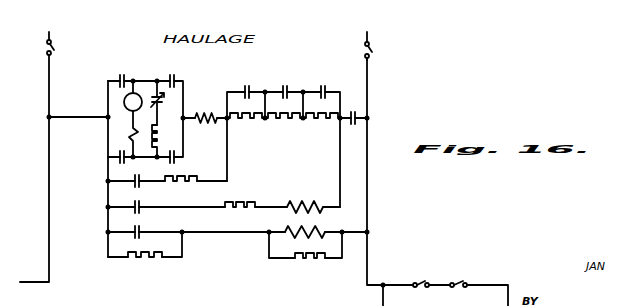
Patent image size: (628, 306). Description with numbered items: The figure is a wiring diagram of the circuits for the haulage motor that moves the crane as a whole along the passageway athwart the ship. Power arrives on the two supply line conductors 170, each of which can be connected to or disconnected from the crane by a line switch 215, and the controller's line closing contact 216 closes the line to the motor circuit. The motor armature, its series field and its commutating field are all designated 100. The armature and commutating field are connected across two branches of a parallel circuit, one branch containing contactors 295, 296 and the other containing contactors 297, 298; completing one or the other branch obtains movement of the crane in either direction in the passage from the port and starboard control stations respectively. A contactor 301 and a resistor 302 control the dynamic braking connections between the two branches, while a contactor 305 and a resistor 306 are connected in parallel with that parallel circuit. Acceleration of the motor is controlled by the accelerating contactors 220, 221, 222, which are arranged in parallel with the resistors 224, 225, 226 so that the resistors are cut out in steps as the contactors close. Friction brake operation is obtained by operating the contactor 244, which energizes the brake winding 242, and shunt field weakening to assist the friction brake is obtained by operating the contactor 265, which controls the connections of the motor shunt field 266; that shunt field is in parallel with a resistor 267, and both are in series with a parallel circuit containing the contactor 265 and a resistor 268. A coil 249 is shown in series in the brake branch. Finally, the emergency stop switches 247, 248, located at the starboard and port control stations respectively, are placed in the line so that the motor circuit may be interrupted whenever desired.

The supply line conductor 170 is at (50, 37).
The line switch 215 is at (52, 54).
The contactor 295 is at (130, 72).
The contactor 296 is at (182, 72).
The haulage motor armature, series field and commutating field 100 is at (128, 112).
The contactor 301 is at (160, 111).
The resistor 302 is at (158, 139).
The contactor 297 is at (132, 163).
The contactor 298 is at (176, 158).
The contactor 305 is at (141, 184).
The resistor 306 is at (186, 184).
The contactor 244 is at (141, 210).
The contactor 265 is at (141, 235).
The resistor 268 is at (147, 261).
The contactor 220 is at (250, 84).
The contactor 221 is at (288, 84).
The contactor 222 is at (326, 84).
The resistor 224 is at (247, 121).
The resistor 225 is at (284, 121).
The resistor 226 is at (322, 121).
The line closing contact 216 is at (354, 111).
The inductance coil 249 is at (246, 202).
The brake winding 242 is at (303, 200).
The motor shunt field 266 is at (314, 225).
The resistor 267 is at (312, 261).
The emergency stop switch 247 is at (421, 288).
The emergency stop switch 248 is at (458, 288).